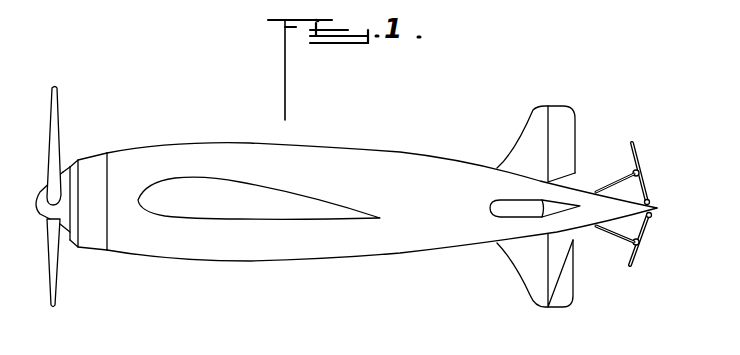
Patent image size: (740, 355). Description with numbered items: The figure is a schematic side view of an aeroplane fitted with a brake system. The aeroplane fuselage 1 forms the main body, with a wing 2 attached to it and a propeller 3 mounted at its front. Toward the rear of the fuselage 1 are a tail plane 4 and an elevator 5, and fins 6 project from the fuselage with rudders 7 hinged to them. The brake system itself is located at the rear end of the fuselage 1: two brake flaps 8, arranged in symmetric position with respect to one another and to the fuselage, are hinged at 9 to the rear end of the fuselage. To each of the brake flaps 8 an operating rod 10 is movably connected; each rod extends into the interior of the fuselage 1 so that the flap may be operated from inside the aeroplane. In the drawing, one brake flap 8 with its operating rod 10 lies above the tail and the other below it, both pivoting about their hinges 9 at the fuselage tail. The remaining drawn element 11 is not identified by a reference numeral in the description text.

The aeroplane fuselage 1 is at (335, 166).
The wing 2 is at (165, 193).
The propeller 3 is at (60, 106).
The tail plane 4 is at (507, 200).
The elevator 5 is at (568, 201).
The fins 6 is at (530, 127).
The rudders 7 is at (558, 113).
The brake flaps 8 is at (632, 150).
The hinge 9 is at (650, 201).
The operating rod 10 is at (639, 172).
The link 11 is at (604, 182).